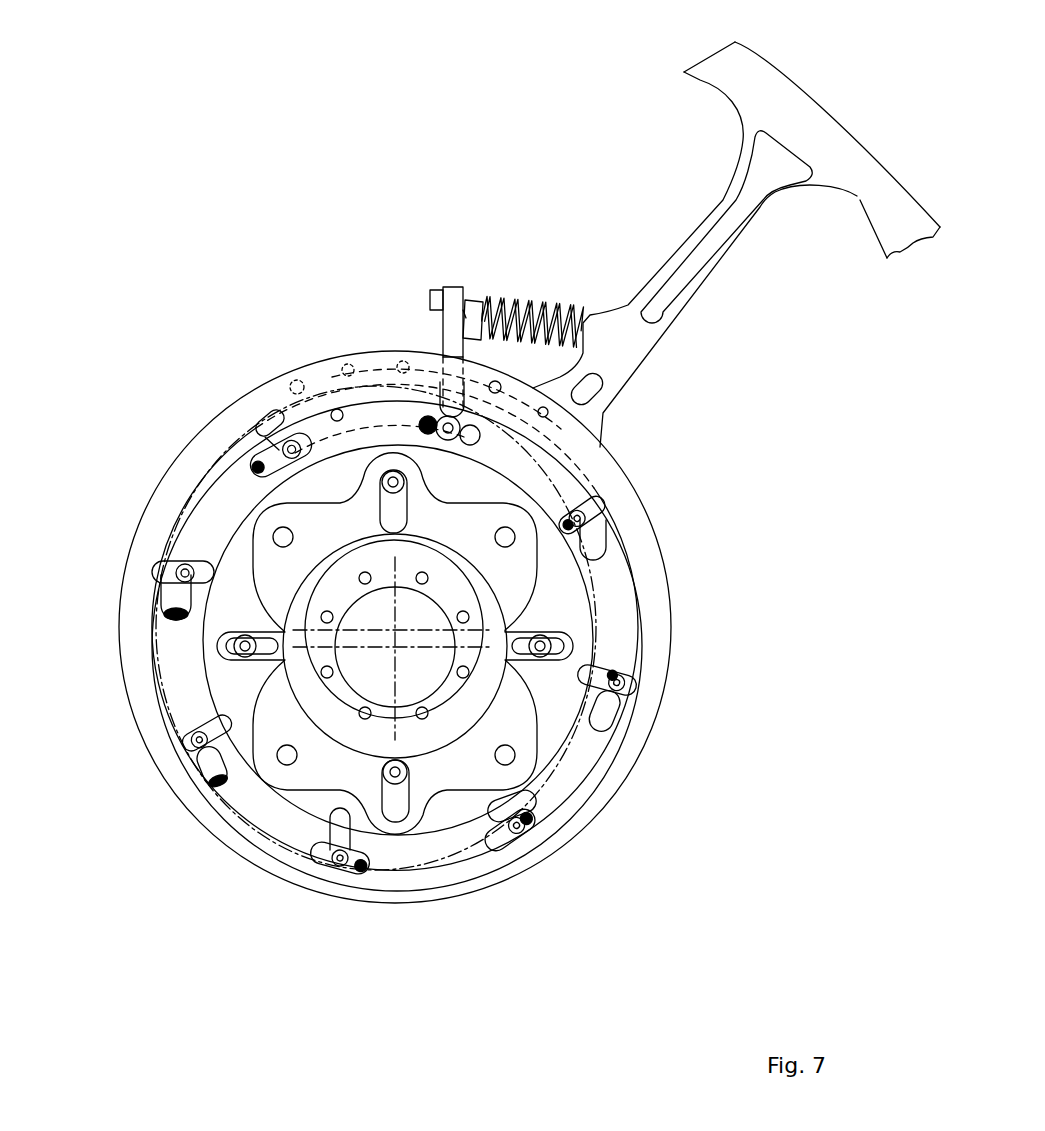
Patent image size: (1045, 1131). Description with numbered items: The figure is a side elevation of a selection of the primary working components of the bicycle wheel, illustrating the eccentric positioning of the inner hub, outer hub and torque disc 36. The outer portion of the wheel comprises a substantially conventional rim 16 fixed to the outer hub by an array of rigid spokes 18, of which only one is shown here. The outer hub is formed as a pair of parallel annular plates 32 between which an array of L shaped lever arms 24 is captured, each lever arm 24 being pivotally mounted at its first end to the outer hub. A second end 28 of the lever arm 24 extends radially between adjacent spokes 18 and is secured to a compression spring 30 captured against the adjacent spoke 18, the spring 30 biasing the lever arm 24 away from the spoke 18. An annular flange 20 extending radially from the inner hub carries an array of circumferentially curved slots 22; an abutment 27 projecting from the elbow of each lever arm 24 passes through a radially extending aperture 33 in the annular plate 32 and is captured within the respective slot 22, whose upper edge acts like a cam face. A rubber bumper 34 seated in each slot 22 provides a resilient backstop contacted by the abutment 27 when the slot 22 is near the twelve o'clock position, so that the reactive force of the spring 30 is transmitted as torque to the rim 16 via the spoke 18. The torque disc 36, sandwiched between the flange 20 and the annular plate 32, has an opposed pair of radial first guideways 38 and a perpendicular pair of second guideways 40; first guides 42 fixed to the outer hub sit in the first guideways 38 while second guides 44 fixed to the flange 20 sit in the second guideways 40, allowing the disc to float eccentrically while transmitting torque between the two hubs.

The rim 16 is at (790, 80).
The spokes 18 is at (728, 192).
The annular flange 20 is at (125, 535).
The slot 22 is at (595, 565).
The lever arm 24 is at (438, 325).
The abutment 27 is at (625, 685).
The second end 28 is at (460, 290).
The compression spring 30 is at (535, 300).
The annular plate 32 is at (312, 415).
The aperture 33 is at (262, 423).
The rubber bumper 34 is at (267, 470).
The torque disc 36 is at (525, 735).
The first guideway 38 is at (232, 646).
The second guideway 40 is at (390, 807).
The first guide 42 is at (553, 646).
The second guide 44 is at (413, 787).